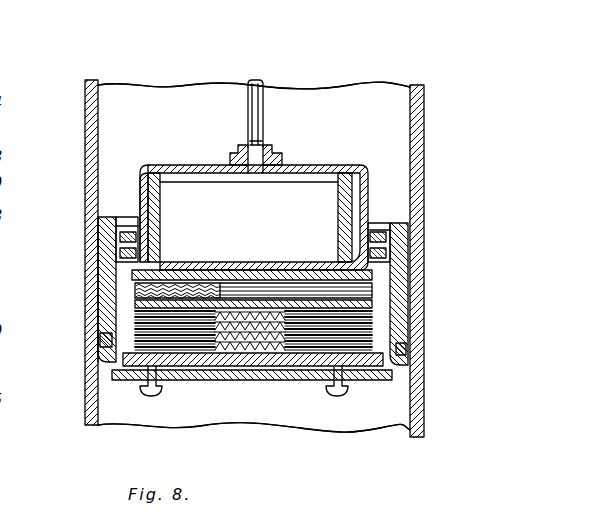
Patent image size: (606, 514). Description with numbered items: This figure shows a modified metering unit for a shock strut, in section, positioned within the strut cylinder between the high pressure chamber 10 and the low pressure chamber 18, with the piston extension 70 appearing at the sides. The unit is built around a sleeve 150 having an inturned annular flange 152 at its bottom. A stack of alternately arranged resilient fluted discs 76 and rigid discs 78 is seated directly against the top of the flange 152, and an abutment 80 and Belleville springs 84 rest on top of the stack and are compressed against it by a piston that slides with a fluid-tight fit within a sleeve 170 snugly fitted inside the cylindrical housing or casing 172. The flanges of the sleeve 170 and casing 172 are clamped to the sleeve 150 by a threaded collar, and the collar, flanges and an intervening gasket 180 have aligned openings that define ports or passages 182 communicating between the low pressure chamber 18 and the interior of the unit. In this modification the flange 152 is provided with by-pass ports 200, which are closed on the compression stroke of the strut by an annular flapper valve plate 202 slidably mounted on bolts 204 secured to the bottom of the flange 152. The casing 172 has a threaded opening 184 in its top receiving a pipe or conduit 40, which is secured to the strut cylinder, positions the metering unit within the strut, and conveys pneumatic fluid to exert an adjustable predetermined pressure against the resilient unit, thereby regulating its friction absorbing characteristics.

The high pressure chamber 10 is at (378, 430).
The low pressure chamber 18 is at (404, 100).
The pipe or conduit 40 is at (262, 92).
The extension 70 is at (425, 110).
The resilient fluted discs 76 is at (372, 318).
The rigid discs 78 is at (372, 336).
The abutment 80 is at (135, 304).
The Belleville springs 84 is at (135, 290).
The sleeve 150 is at (392, 296).
The inturned annular flange 152 is at (358, 366).
The sleeve 170 is at (162, 195).
The cylindrical housing or casing 172 is at (322, 165).
The gasket 180 is at (98, 240).
The ports or passages 182 is at (112, 224).
The threaded opening 184 is at (246, 147).
The by-pass ports 200 is at (100, 343).
The annular flapper valve plate 202 is at (205, 380).
The bolts 204 is at (156, 395).